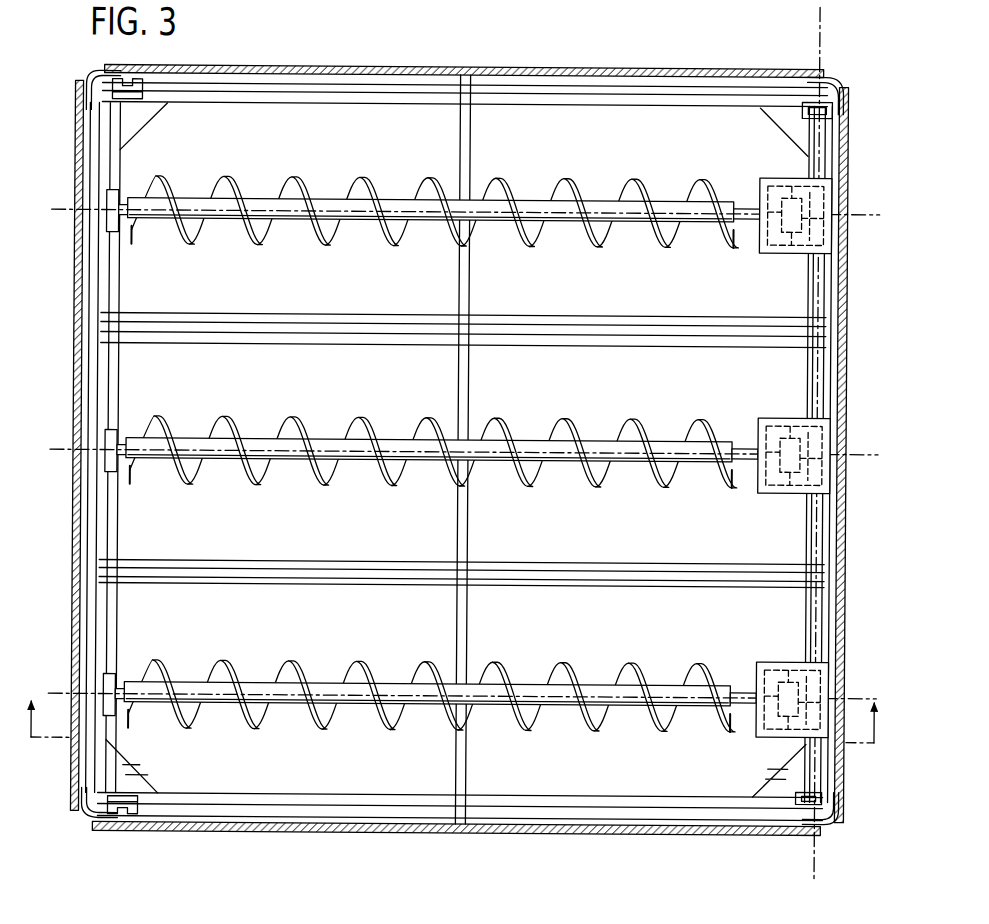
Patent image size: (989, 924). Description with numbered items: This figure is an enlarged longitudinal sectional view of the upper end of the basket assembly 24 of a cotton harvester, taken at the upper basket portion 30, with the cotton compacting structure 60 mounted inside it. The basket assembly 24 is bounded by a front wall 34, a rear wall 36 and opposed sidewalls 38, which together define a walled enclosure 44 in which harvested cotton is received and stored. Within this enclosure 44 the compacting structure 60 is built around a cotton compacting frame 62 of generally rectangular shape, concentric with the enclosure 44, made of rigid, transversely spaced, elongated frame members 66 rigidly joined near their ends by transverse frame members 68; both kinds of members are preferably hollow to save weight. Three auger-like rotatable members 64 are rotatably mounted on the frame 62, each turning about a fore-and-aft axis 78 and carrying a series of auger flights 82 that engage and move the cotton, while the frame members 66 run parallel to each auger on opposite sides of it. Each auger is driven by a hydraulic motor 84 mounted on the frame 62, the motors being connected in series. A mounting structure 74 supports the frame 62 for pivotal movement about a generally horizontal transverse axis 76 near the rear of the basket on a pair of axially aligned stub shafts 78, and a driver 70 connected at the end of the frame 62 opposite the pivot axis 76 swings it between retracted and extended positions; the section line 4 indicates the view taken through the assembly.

The section line 4- 4 is at (452, 720).
The basket assembly 24 is at (466, 455).
The upper basket portion 30 is at (851, 190).
The front wall 34 is at (76, 486).
The rear wall 36 is at (845, 561).
The sidewalls 38 is at (498, 67).
The walled enclosure 44 is at (82, 370).
The cotton compacting structure 60 is at (216, 158).
The cotton compacting frame 62 is at (405, 108).
The rotatable members 64 is at (576, 505).
The frame members 66 is at (548, 105).
The transverse frame members 68 is at (118, 290).
The driver 70 is at (120, 114).
The mounting structure 74 is at (803, 116).
The horizontal transverse axis 76 is at (815, 401).
The stub shafts 78 is at (826, 73).
The auger flights 82 is at (360, 222).
The hydraulic motor 84 is at (798, 251).